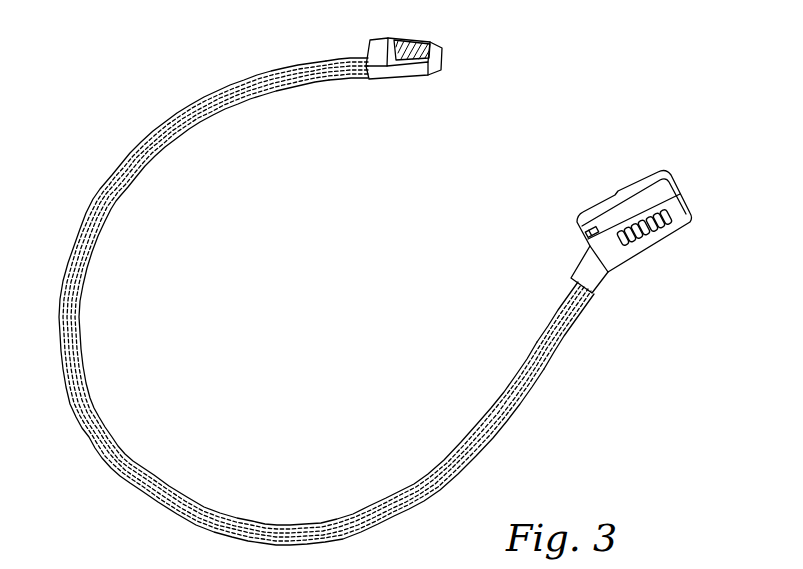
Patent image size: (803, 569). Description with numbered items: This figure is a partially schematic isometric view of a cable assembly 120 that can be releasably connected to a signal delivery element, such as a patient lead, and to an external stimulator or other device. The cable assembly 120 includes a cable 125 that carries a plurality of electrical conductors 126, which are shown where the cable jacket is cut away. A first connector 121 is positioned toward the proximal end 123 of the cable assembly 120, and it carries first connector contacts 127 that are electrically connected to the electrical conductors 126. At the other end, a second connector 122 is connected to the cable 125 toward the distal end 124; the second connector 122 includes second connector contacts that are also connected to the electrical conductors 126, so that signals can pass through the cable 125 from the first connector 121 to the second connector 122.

The cable assembly 120 is at (111, 121).
The first connector 121 is at (383, 39).
The second connector 122 is at (693, 222).
The proximal end 123 is at (353, 88).
The distal end 124 is at (551, 275).
The cable 125 is at (101, 224).
The electrical conductors 126 is at (155, 146).
The first connector contacts 127 is at (438, 45).